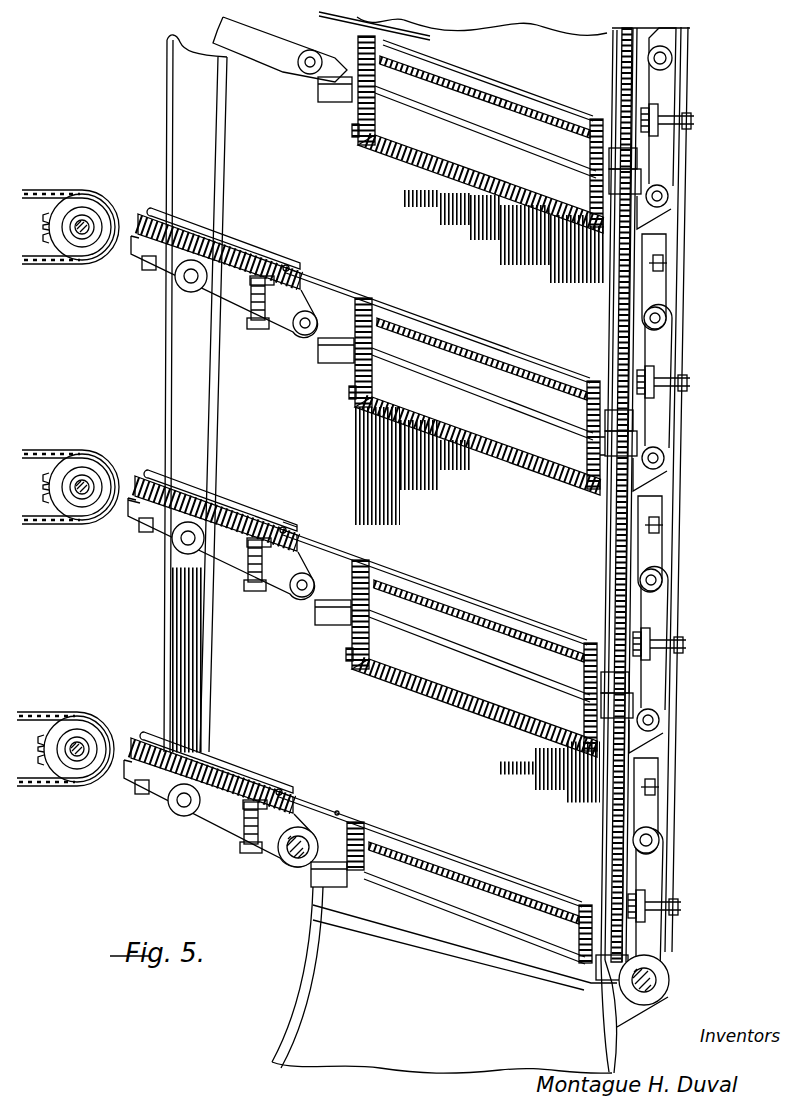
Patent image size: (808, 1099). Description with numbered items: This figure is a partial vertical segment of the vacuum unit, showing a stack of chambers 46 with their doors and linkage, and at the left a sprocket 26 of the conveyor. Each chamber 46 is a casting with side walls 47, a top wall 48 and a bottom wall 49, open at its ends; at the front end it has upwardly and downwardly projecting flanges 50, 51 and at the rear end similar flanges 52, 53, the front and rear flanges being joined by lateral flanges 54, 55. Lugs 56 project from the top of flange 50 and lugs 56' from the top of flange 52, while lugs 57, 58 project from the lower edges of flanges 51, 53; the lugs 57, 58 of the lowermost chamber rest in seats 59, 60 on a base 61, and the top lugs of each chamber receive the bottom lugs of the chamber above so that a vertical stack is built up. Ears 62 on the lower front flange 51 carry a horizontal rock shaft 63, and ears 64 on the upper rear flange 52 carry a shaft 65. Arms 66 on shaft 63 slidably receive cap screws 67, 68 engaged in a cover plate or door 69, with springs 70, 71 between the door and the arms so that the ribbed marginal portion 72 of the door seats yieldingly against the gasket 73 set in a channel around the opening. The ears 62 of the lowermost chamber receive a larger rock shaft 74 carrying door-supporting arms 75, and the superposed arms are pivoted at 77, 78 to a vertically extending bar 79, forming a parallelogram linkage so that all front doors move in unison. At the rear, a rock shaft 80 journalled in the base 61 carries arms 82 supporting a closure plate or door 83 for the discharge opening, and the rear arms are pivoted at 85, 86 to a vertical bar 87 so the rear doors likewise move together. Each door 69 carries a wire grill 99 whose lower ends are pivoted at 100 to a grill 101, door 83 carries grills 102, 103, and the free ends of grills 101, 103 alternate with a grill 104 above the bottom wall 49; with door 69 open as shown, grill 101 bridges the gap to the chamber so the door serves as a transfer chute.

The sprocket 26 is at (83, 245).
The chamber 46 is at (560, 483).
The side wall 47 is at (443, 497).
The top wall 48 is at (470, 447).
The bottom wall 49 is at (480, 617).
The upwardly projecting front flange 50 is at (374, 383).
The downwardly projecting front flange 51 is at (372, 610).
The upper rear flange 52 is at (588, 455).
The lower rear flange 53 is at (585, 678).
The lateral flange 54 is at (490, 422).
The lateral flange 55 is at (530, 642).
The lug 56 is at (325, 366).
The lug 56' is at (666, 433).
The lug 57 is at (313, 618).
The lug 58 is at (655, 690).
The seat 59 is at (345, 892).
The seat 60 is at (605, 977).
The base 61 is at (322, 1012).
The ear 62 is at (305, 805).
The rock shaft 63 is at (300, 592).
The ear 64 is at (660, 490).
The shaft 65 is at (655, 462).
The arm 66 is at (205, 557).
The cap screw 67 is at (148, 535).
The cap screw 68 is at (248, 593).
The cover plate or door 69 is at (225, 512).
The spring 70 is at (138, 512).
The spring 71 is at (270, 522).
The ribbed marginal portion 72 is at (150, 470).
The gasket 73 is at (350, 395).
The rock shaft 74 is at (284, 864).
The door-supporting arm 75 is at (210, 858).
The pivot 77 is at (180, 820).
The pivot 78 is at (195, 482).
The vertically extending bar 79 is at (212, 182).
The rock shaft 80 is at (655, 977).
The arm 82 is at (660, 875).
The closure plate or door 83 is at (660, 815).
The pivot 85 is at (655, 838).
The pivot 86 is at (655, 580).
The vertical bar 87 is at (681, 603).
The grill 99 is at (230, 760).
The pivotal engagement 100 is at (281, 787).
The grill 101 is at (352, 810).
The grill 102 is at (598, 832).
The grill 103 is at (575, 895).
The grill 104 is at (415, 842).